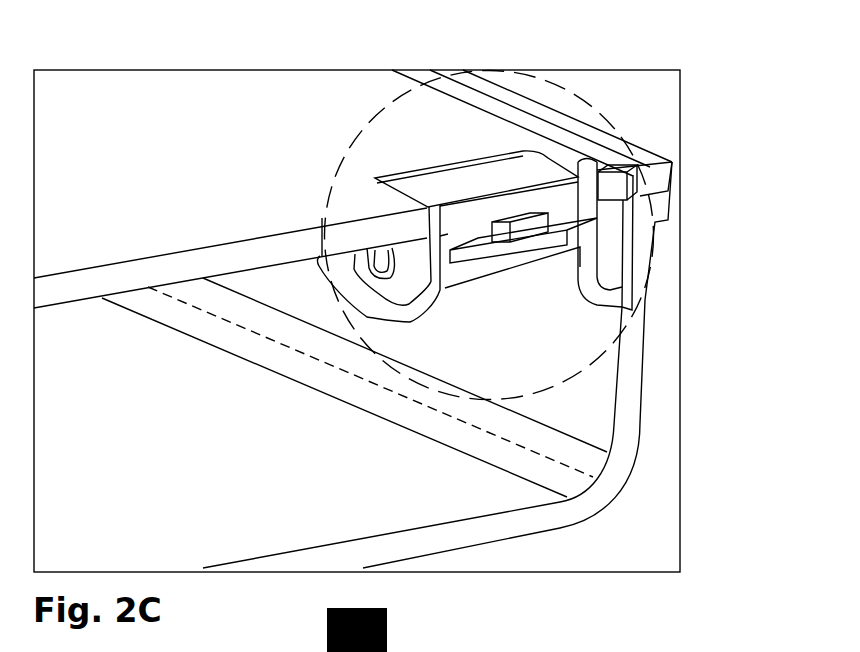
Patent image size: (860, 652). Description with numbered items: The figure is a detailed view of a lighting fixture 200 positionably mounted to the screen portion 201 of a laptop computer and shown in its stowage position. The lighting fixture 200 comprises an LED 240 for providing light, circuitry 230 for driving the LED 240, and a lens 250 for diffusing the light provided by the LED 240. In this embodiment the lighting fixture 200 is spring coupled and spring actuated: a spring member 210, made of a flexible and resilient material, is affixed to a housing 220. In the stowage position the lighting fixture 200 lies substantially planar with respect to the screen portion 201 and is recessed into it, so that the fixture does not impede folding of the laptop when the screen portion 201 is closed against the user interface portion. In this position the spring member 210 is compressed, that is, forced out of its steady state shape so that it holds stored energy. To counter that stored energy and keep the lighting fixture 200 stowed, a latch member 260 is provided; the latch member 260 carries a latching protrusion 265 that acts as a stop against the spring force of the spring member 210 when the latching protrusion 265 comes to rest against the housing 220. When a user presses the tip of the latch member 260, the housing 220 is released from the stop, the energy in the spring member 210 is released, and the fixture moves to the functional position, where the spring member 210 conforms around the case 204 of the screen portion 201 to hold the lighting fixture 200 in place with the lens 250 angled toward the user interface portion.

The lighting fixture 200 is at (640, 651).
The screen portion 201 is at (200, 263).
The case 204 is at (563, 527).
The spring member 210 is at (420, 303).
The housing 220 is at (497, 280).
The circuitry 230 is at (468, 255).
The LED 240 is at (520, 227).
The lens 250 is at (527, 197).
The latch member 260 is at (563, 310).
The latching protrusion 265 is at (615, 323).